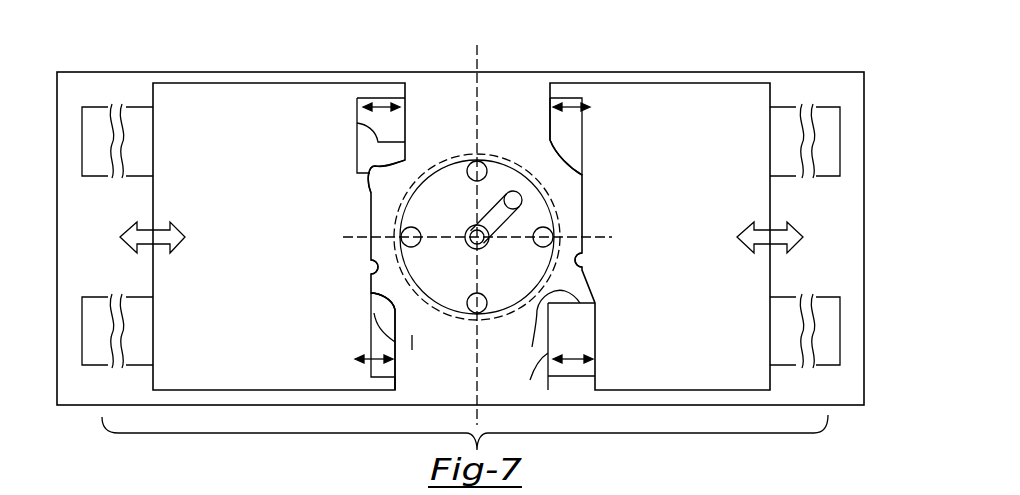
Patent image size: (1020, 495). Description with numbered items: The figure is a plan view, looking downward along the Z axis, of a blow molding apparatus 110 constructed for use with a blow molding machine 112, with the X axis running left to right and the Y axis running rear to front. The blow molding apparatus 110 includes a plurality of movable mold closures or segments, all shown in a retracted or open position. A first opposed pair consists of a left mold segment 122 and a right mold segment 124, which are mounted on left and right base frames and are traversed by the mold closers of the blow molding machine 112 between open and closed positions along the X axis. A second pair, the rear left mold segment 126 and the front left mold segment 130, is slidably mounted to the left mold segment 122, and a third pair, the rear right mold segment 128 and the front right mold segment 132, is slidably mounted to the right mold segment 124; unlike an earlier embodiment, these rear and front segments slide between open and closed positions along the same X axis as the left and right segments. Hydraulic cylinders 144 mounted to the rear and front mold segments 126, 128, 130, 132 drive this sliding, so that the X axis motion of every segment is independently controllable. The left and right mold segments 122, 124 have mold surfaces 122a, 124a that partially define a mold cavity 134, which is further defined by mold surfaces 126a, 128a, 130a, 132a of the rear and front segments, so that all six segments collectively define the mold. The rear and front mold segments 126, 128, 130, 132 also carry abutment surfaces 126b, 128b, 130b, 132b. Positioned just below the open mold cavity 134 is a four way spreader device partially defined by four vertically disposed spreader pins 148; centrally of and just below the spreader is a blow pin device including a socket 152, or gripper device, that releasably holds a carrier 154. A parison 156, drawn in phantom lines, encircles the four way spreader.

The blow molding apparatus 110 is at (482, 449).
The blow molding machine 112 is at (866, 68).
The left mold segment 122 is at (279, 246).
The mold surface 122a is at (373, 274).
The right mold segment 124 is at (673, 246).
The mold surface 124a is at (580, 262).
The rear left mold segment 126 is at (380, 103).
The mold surface 126a is at (405, 168).
The abutment surface 126b is at (405, 104).
The rear right mold segment 128 is at (555, 99).
The mold surface 128a is at (556, 150).
The abutment surface 128b is at (550, 110).
The front left mold segment 130 is at (383, 373).
The mold surface 130a is at (400, 307).
The abutment surface 130b is at (397, 372).
The front right mold segment 132 is at (592, 376).
The mold surface 132a is at (558, 296).
The abutment surface 132b is at (548, 358).
The mold cavity 134 is at (456, 355).
The hydraulic cylinders 144 is at (136, 118).
The spreader pins 148 is at (467, 178).
The socket 152 is at (468, 251).
The carrier 154 is at (522, 193).
The parison 156 is at (467, 153).